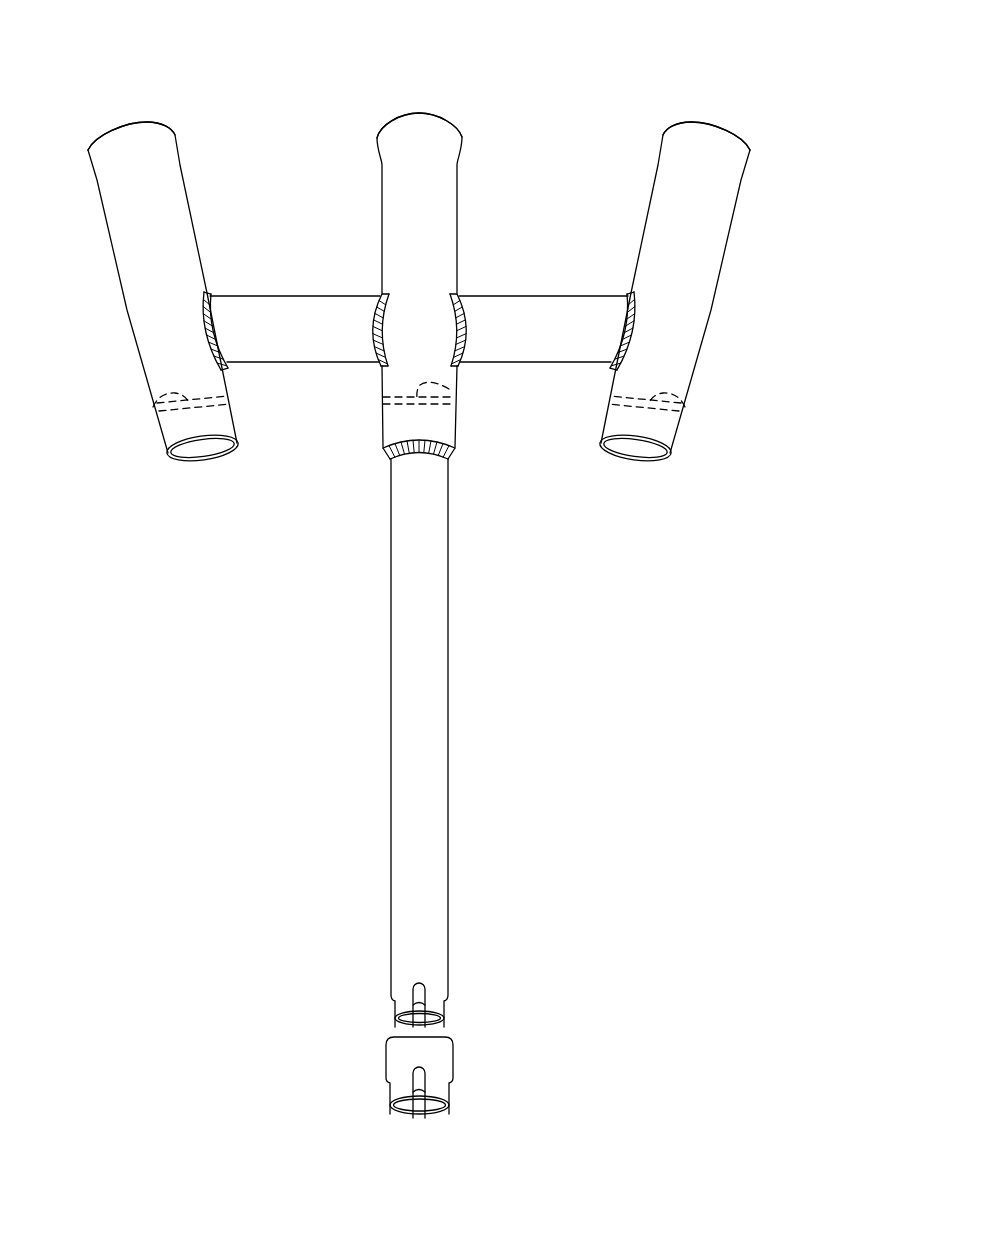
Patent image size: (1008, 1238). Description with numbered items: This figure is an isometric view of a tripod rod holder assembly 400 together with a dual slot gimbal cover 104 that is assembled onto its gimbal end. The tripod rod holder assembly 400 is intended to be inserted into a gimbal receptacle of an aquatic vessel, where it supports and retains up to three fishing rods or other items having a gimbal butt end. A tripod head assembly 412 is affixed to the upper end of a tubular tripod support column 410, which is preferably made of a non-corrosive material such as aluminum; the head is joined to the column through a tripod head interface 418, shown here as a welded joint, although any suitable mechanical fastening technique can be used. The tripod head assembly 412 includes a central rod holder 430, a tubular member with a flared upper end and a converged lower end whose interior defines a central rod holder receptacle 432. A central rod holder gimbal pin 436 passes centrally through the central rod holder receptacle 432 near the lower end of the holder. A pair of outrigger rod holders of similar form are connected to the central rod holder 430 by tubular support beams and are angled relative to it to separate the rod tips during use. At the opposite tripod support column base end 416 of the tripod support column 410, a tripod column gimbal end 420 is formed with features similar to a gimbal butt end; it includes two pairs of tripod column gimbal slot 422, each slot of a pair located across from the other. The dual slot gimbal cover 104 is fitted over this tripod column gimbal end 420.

The dual slot gimbal cover 104 is at (465, 1080).
The tripod rod holder assembly 400 is at (615, 673).
The tripod support column 410 is at (448, 725).
The tripod head assembly 412 is at (803, 129).
The tripod support column base end 416 is at (440, 1030).
The tripod head interface 418 is at (452, 458).
The tripod column gimbal end 420 is at (354, 994).
The tripod column gimbal slot 422 is at (416, 1004).
The central rod holder 430 is at (458, 218).
The central rod holder receptacle 432 is at (418, 108).
The central rod holder gimbal pin 436 is at (449, 390).